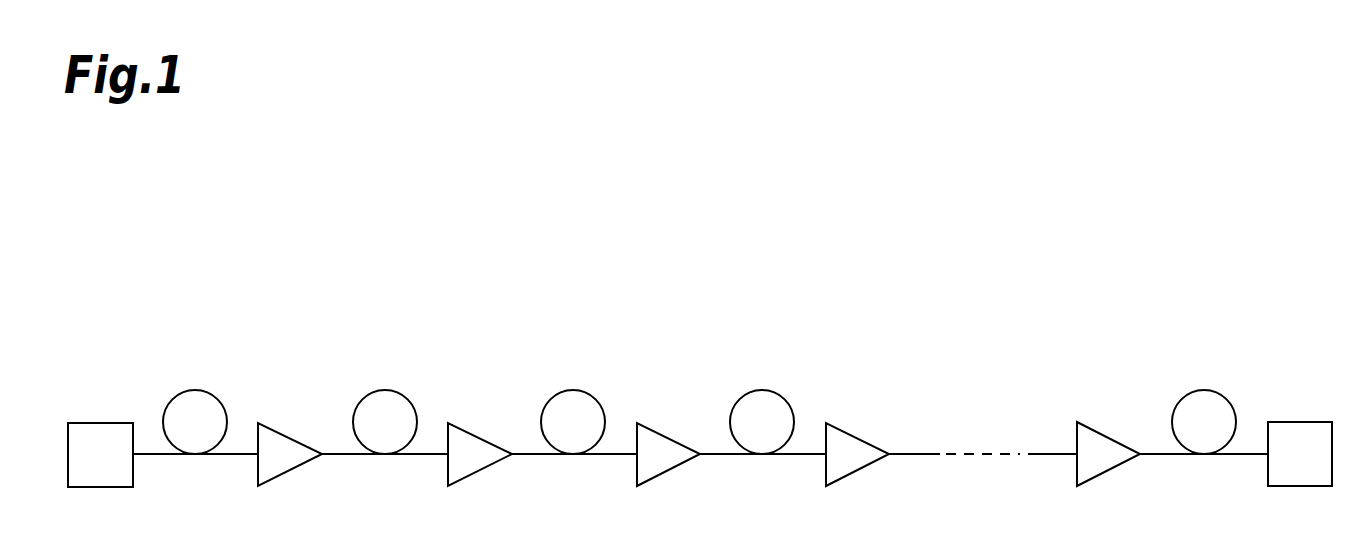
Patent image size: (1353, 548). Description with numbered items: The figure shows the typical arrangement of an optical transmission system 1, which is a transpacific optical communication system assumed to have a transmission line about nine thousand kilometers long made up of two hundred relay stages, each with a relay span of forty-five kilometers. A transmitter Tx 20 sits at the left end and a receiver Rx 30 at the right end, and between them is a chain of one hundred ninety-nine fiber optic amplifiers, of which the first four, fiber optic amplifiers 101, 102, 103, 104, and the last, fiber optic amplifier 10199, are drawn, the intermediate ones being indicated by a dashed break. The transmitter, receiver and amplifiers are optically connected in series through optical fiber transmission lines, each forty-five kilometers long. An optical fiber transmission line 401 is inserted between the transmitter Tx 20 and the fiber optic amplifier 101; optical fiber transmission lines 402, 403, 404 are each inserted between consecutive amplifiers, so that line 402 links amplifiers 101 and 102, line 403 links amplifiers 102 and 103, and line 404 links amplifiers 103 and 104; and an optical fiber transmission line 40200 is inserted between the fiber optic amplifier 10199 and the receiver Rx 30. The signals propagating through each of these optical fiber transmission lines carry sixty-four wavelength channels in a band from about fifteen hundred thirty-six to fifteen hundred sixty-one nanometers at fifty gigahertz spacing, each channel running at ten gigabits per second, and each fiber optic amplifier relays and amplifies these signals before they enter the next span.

The optical transmission system 1 is at (831, 286).
The transmitter Tx 20 is at (95, 422).
The receiver Rx 30 is at (1300, 421).
The optical fiber transmission line 401 is at (220, 394).
The optical fiber transmission line 402 is at (407, 396).
The optical fiber transmission line 403 is at (596, 396).
The optical fiber transmission line 404 is at (784, 393).
The optical fiber transmission line 40200 is at (1228, 395).
The fiber optic amplifier 101 is at (288, 433).
The fiber optic amplifier 102 is at (476, 433).
The fiber optic amplifier 103 is at (664, 433).
The fiber optic amplifier 104 is at (853, 433).
The fiber optic amplifier 10199 is at (1107, 431).